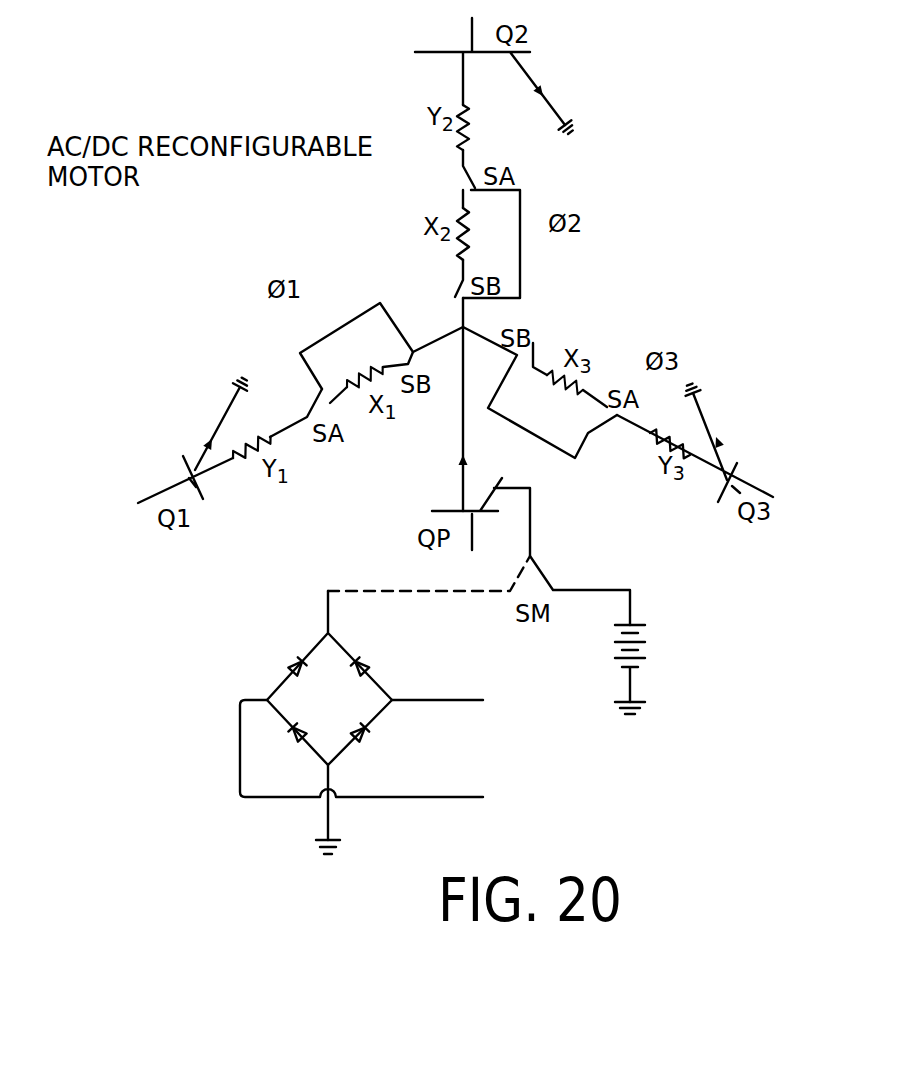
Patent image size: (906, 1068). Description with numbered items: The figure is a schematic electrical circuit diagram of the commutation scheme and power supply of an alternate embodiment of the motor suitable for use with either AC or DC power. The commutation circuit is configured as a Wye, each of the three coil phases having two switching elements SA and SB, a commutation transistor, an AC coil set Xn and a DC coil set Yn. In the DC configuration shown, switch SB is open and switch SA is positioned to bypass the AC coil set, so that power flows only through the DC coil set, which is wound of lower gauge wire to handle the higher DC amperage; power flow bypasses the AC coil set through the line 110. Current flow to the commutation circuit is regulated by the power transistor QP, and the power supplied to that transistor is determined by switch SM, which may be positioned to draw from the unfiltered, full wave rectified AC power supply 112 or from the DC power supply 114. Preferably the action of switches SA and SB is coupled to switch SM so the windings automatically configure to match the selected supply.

The line 110 is at (520, 262).
The full wave rectified AC power supply 112 is at (463, 743).
The DC power supply 114 is at (663, 670).